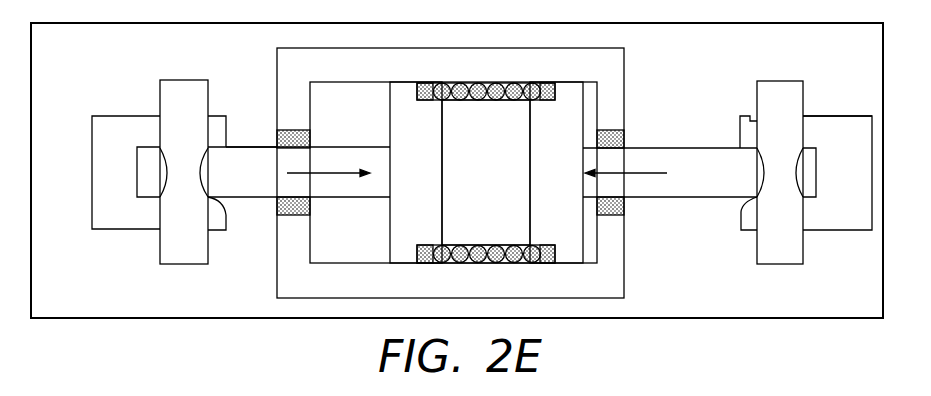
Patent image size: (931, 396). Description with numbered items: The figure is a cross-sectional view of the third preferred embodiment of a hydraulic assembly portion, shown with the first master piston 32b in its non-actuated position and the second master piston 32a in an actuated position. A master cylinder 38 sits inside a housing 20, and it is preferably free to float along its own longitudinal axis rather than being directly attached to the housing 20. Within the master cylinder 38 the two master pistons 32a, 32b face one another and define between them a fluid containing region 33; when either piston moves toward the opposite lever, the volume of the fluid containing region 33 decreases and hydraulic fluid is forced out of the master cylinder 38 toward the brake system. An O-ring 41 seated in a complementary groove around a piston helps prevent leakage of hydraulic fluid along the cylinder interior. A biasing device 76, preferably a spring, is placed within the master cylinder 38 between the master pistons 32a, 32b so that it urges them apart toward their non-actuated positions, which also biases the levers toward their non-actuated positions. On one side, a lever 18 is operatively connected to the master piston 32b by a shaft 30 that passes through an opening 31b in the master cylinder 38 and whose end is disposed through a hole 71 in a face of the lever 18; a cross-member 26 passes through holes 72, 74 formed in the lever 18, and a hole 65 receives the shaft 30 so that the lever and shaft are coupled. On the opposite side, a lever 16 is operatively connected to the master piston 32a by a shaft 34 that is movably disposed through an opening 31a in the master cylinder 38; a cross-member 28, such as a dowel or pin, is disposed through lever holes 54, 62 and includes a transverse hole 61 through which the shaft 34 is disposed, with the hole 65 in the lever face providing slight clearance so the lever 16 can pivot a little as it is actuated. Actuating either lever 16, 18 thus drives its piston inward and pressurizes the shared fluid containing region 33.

The lever 16 is at (862, 141).
The lever 18 is at (124, 140).
The housing 20 is at (868, 295).
The cross-member 26 is at (196, 216).
The cross-member 28 is at (791, 216).
The shaft 30 is at (268, 186).
The opening 31a is at (626, 143).
The opening 31b is at (311, 142).
The master piston 32a is at (575, 167).
The master piston 32b is at (432, 167).
The fluid containing region 33 is at (498, 186).
The shaft 34 is at (713, 184).
The master cylinder 38 is at (308, 84).
The O-ring 41 is at (418, 84).
The lever hole 54 is at (803, 116).
The hole 61 is at (762, 146).
The lever hole 62 is at (756, 226).
The hole 65 is at (161, 135).
The hole 71 is at (224, 146).
The hole 72 is at (159, 229).
The hole 74 is at (210, 116).
The biasing device 76 is at (487, 84).